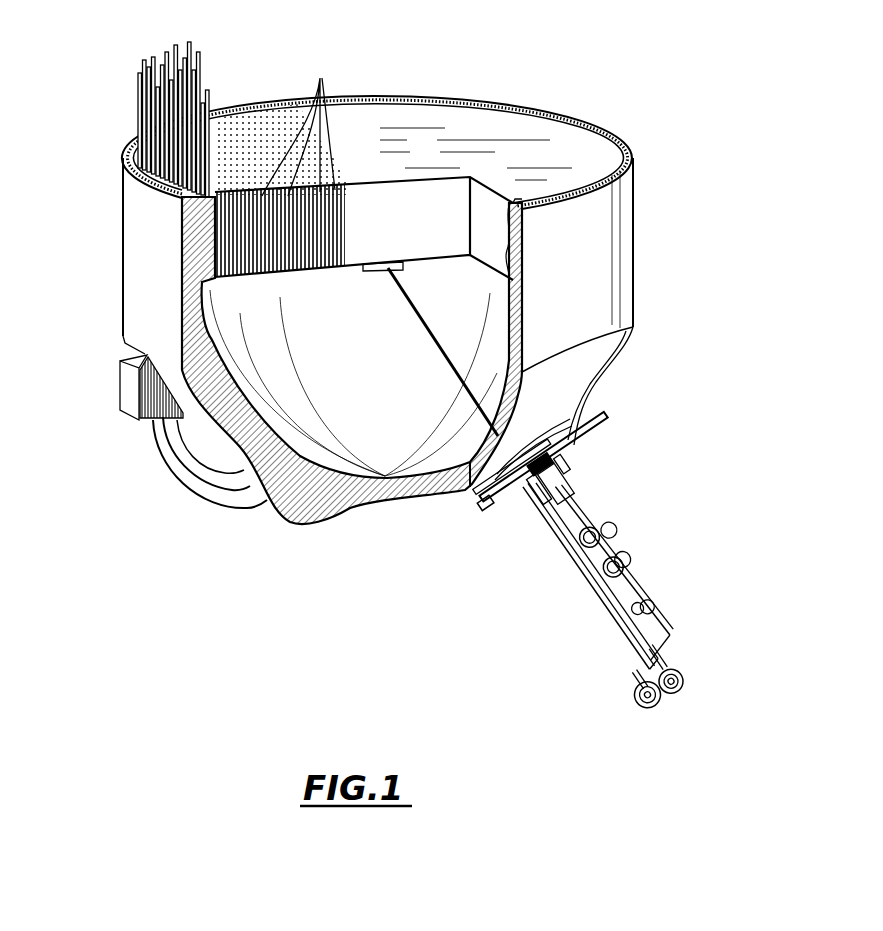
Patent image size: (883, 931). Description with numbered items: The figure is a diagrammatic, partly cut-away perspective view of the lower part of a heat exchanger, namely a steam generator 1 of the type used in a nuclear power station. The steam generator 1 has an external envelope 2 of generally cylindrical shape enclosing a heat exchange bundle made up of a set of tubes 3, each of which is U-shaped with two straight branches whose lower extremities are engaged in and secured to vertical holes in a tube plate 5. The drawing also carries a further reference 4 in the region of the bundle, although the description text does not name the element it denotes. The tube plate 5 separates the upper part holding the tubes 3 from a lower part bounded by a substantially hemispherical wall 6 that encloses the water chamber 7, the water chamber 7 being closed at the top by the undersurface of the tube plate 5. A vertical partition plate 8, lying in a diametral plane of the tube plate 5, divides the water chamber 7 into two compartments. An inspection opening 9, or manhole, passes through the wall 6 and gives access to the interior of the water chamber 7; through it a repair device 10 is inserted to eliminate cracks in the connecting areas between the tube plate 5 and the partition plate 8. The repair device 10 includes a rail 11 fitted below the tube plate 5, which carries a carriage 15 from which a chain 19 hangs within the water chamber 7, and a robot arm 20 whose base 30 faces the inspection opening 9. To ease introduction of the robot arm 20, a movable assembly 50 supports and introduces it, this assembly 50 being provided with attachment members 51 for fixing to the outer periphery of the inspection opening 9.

The steam generator 1 is at (462, 301).
The external envelope 2 is at (131, 237).
The tubes 3 is at (140, 76).
The feed region 4 is at (298, 122).
The tube plate 5 is at (401, 212).
The hemispherical wall 6 is at (227, 403).
The water chamber 7 is at (374, 452).
The partition plate 8 is at (353, 383).
The inspection opening 9 is at (577, 450).
The repair device 10 is at (559, 522).
The rail 11 is at (268, 278).
The carriage 15 is at (395, 268).
The chain 19 is at (437, 343).
The robot arm 20 is at (618, 571).
The base 30 is at (582, 467).
The assembly 50 is at (558, 558).
The attachment members 51 is at (488, 491).